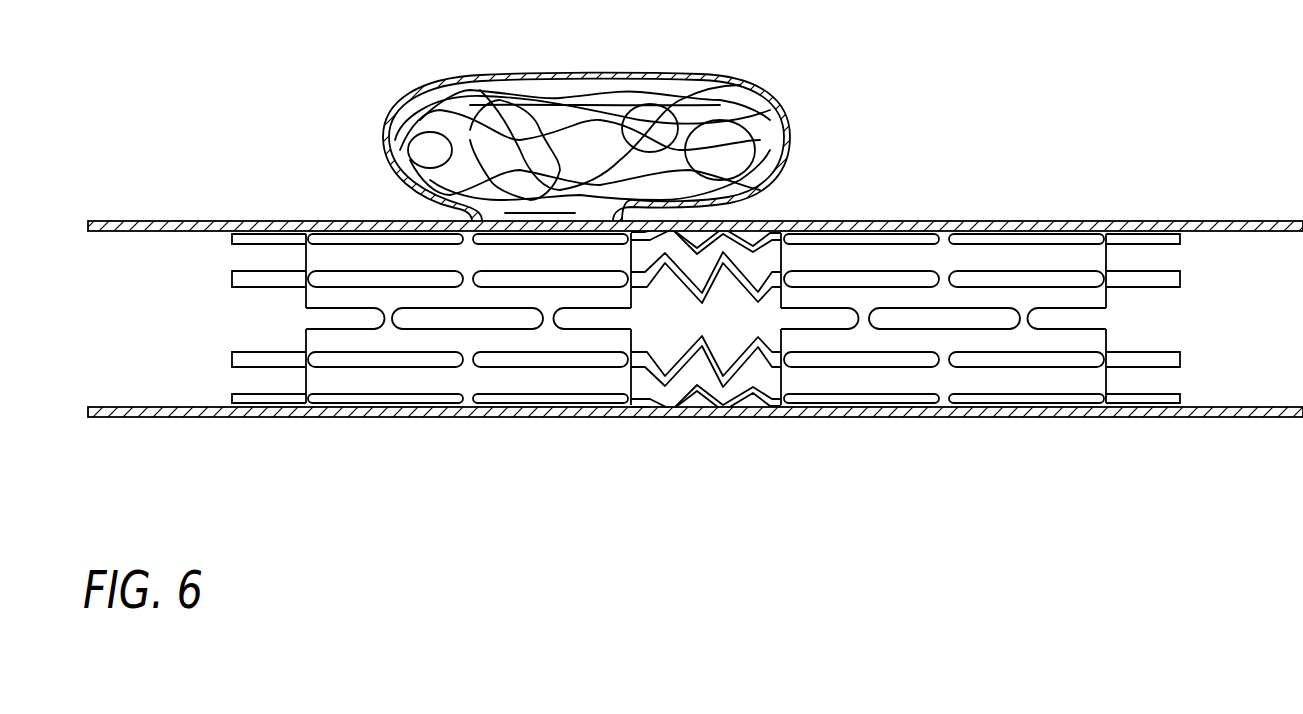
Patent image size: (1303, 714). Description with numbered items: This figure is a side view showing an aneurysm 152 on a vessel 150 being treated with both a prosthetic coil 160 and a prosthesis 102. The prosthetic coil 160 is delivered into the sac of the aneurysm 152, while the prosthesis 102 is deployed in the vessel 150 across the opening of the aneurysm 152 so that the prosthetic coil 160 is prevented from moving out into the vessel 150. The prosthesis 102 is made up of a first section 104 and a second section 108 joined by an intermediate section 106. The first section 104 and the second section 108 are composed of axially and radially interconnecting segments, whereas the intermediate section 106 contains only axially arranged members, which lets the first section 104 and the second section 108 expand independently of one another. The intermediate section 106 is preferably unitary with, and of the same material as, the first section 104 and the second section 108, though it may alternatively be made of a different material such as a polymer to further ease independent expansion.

The prosthesis 102 is at (706, 375).
The first section 104 is at (373, 448).
The intermediate section 106 is at (712, 441).
The second section 108 is at (942, 442).
The vessel 150 is at (1282, 418).
The aneurysm 152 is at (711, 77).
The prosthetic coil 160 is at (464, 133).